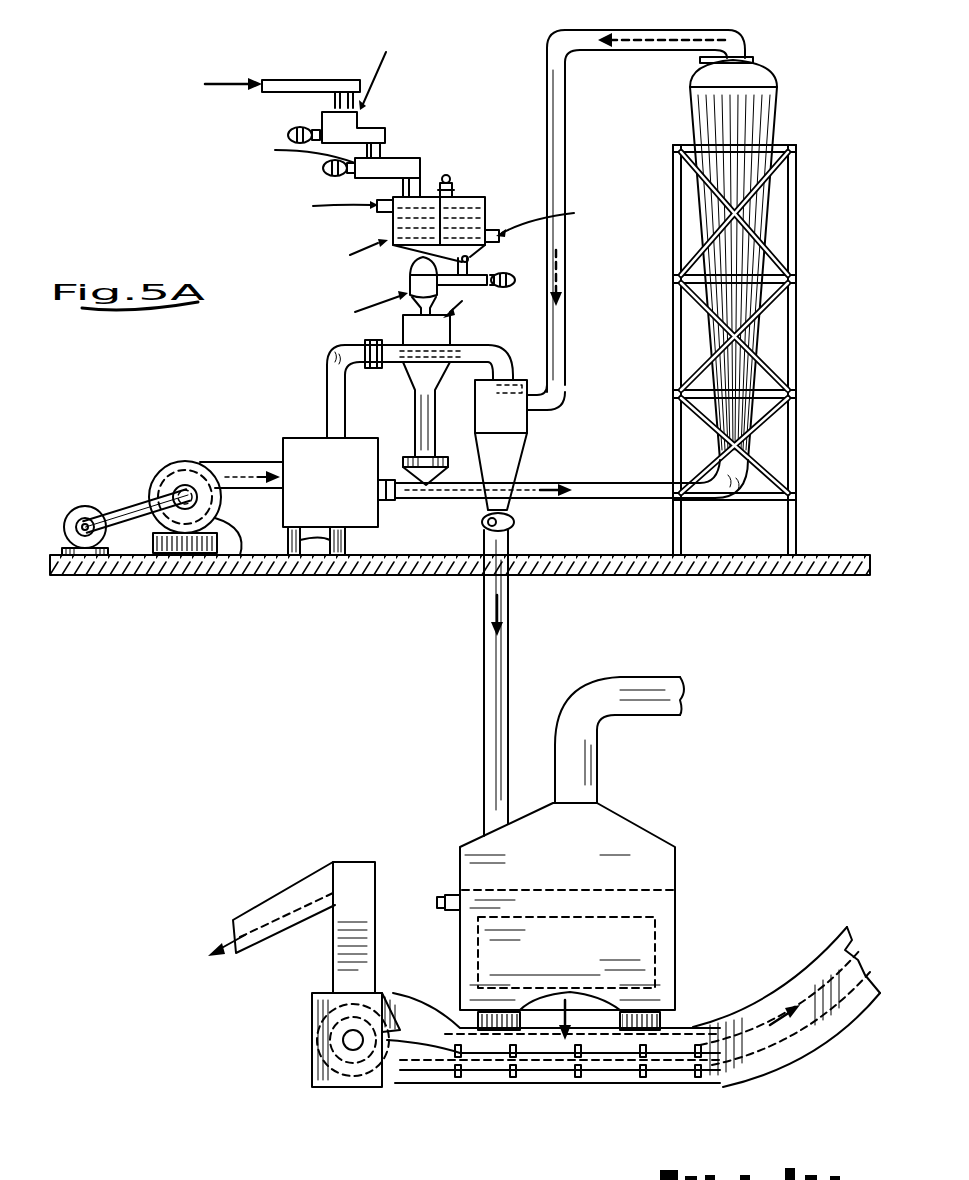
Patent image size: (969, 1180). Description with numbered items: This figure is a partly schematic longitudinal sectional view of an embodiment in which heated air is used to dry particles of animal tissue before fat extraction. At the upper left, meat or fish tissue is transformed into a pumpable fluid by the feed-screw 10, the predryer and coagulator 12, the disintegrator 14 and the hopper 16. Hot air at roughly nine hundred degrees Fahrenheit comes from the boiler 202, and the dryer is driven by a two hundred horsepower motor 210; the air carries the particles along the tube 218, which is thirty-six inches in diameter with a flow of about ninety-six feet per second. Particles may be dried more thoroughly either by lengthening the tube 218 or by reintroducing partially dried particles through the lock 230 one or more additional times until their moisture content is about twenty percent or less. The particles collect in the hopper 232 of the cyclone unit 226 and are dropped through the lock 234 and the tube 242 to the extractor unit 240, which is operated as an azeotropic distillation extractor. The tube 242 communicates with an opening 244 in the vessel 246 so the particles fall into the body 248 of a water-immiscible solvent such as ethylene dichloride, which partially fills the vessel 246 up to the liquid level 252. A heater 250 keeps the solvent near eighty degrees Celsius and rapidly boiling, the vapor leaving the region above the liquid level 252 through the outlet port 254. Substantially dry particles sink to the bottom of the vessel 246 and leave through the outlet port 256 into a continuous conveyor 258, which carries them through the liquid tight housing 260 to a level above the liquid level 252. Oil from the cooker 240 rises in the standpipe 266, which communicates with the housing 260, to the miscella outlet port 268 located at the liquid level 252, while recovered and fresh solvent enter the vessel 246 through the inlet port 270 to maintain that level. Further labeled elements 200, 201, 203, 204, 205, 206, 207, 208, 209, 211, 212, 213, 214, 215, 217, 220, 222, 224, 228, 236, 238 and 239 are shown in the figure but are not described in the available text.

The feed-screw 10 is at (322, 125).
The predryer and coagulator 12 is at (402, 158).
The disintegrator 14 is at (420, 285).
The hopper 16 is at (427, 334).
The drying and conveying system 200 is at (310, 358).
The coagulator 201 is at (477, 188).
The boiler 202 is at (348, 485).
The coagulator chamber wall 203 is at (392, 230).
The air conduit 204 is at (287, 470).
The coagulator inlet 205 is at (403, 186).
The outlet conduit 206 is at (410, 261).
The valve 207 is at (470, 259).
The blower base 208 is at (219, 512).
The steam valve 209 is at (433, 195).
The motor 210 is at (86, 505).
The valve stem 211 is at (457, 178).
The drive belt 212 is at (133, 520).
The blower rotor 213 is at (448, 176).
The blower 214 is at (243, 458).
The steam inlet 215 is at (491, 230).
The steam outlet 217 is at (375, 213).
The tube 218 is at (620, 485).
The pipe elbow 220 is at (740, 490).
The drying tower 222 is at (740, 117).
The return pipe 224 is at (553, 120).
The cyclone unit 226 is at (520, 426).
The discharge cone 228 is at (428, 490).
The lock 230 is at (412, 455).
The hopper 232 is at (500, 465).
The lock 234 is at (514, 522).
The pipe connection 236 is at (560, 372).
The air pipe 238 is at (400, 348).
The support 239 is at (326, 530).
The extractor unit 240 is at (580, 869).
The tube 242 is at (490, 686).
The opening 244 is at (496, 836).
The vessel 246 is at (676, 845).
The body of solvent 248 is at (570, 962).
The heater 250 is at (655, 938).
The liquid level 252 is at (645, 890).
The outlet port 254 is at (600, 800).
The outlet port 256 is at (615, 1022).
The conveyor 258 is at (400, 1072).
The liquid tight housing 260 is at (825, 940).
The standpipe 266 is at (335, 950).
The miscella outlet port 268 is at (335, 888).
The inlet port 270 is at (445, 897).